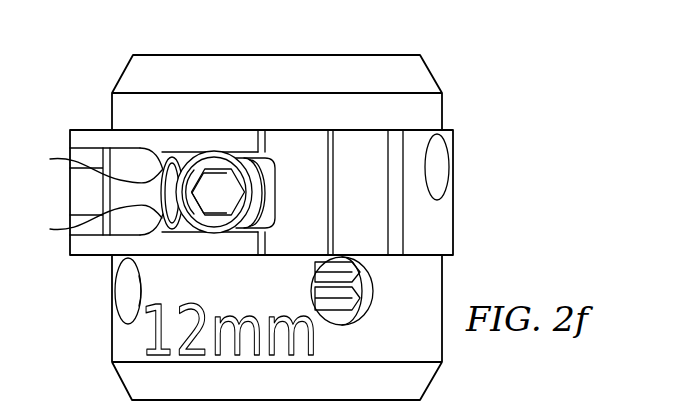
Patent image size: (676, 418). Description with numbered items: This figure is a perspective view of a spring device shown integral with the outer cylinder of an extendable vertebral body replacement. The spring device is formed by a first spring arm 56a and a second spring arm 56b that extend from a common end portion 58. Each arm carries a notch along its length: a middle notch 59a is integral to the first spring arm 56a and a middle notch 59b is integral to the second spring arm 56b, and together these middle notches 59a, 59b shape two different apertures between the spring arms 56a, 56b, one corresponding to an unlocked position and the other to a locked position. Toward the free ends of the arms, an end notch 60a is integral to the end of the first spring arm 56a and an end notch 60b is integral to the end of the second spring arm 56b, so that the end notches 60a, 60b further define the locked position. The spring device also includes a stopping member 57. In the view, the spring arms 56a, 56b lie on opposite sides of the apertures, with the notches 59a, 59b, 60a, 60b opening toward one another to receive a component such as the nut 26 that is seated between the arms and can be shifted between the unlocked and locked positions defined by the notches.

The nut 26 is at (246, 177).
The first spring arm 56a is at (100, 140).
The second spring arm 56b is at (98, 247).
The stopping member 57 is at (300, 145).
The end portion 58 is at (70, 192).
The middle notch 59a is at (87, 165).
The middle notch 59b is at (87, 223).
The end notch 60a is at (227, 143).
The end notch 60b is at (230, 246).